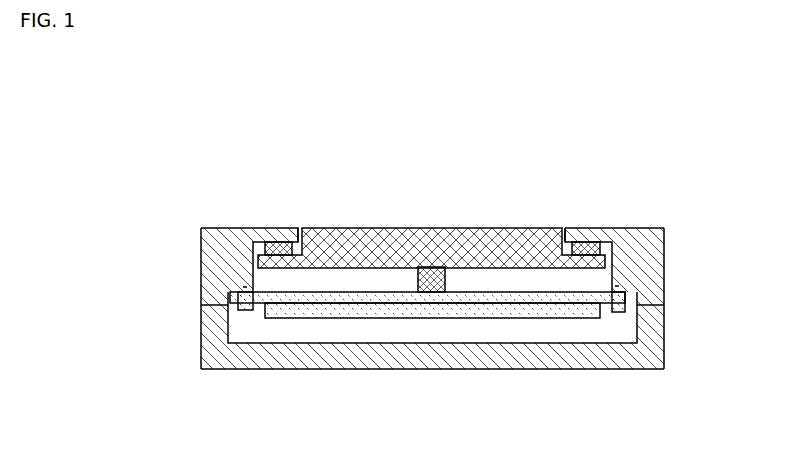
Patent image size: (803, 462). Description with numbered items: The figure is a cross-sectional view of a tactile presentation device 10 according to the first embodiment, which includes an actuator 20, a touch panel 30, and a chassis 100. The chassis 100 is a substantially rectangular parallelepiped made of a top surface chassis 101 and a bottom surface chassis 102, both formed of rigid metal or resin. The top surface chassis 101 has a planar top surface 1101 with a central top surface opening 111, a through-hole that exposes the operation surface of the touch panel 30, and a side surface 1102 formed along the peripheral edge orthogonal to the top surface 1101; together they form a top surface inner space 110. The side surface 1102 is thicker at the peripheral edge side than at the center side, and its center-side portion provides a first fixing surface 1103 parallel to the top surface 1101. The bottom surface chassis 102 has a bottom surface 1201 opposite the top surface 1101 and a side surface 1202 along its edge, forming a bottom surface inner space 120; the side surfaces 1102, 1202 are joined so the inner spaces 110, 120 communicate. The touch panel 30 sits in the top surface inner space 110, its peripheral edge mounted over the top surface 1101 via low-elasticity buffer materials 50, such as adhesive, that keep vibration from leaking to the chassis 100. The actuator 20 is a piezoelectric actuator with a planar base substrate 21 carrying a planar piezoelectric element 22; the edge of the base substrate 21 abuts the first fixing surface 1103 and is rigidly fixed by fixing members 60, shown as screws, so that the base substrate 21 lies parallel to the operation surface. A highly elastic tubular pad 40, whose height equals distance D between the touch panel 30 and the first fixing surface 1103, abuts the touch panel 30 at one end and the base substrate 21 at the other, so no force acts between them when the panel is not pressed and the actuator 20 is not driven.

The tactile presentation device 10 is at (703, 110).
The chassis 100 is at (722, 166).
The top surface chassis 101 is at (697, 203).
The bottom surface chassis 102 is at (703, 380).
The top surface inner space 110 is at (351, 255).
The top surface opening 111 is at (558, 213).
The top surface 1101 is at (606, 228).
The side surface 1102 is at (650, 252).
The first fixing surface 1103 is at (211, 288).
The bottom surface inner space 120 is at (545, 356).
The bottom surface 1201 is at (624, 360).
The side surface 1202 is at (648, 352).
The actuator 20 is at (396, 418).
The base substrate 21 is at (403, 310).
The piezoelectric element 22 is at (371, 305).
The touch panel 30 is at (418, 228).
The pad 40 is at (442, 265).
The buffer materials 50 is at (266, 241).
The fixing members 60 is at (242, 312).